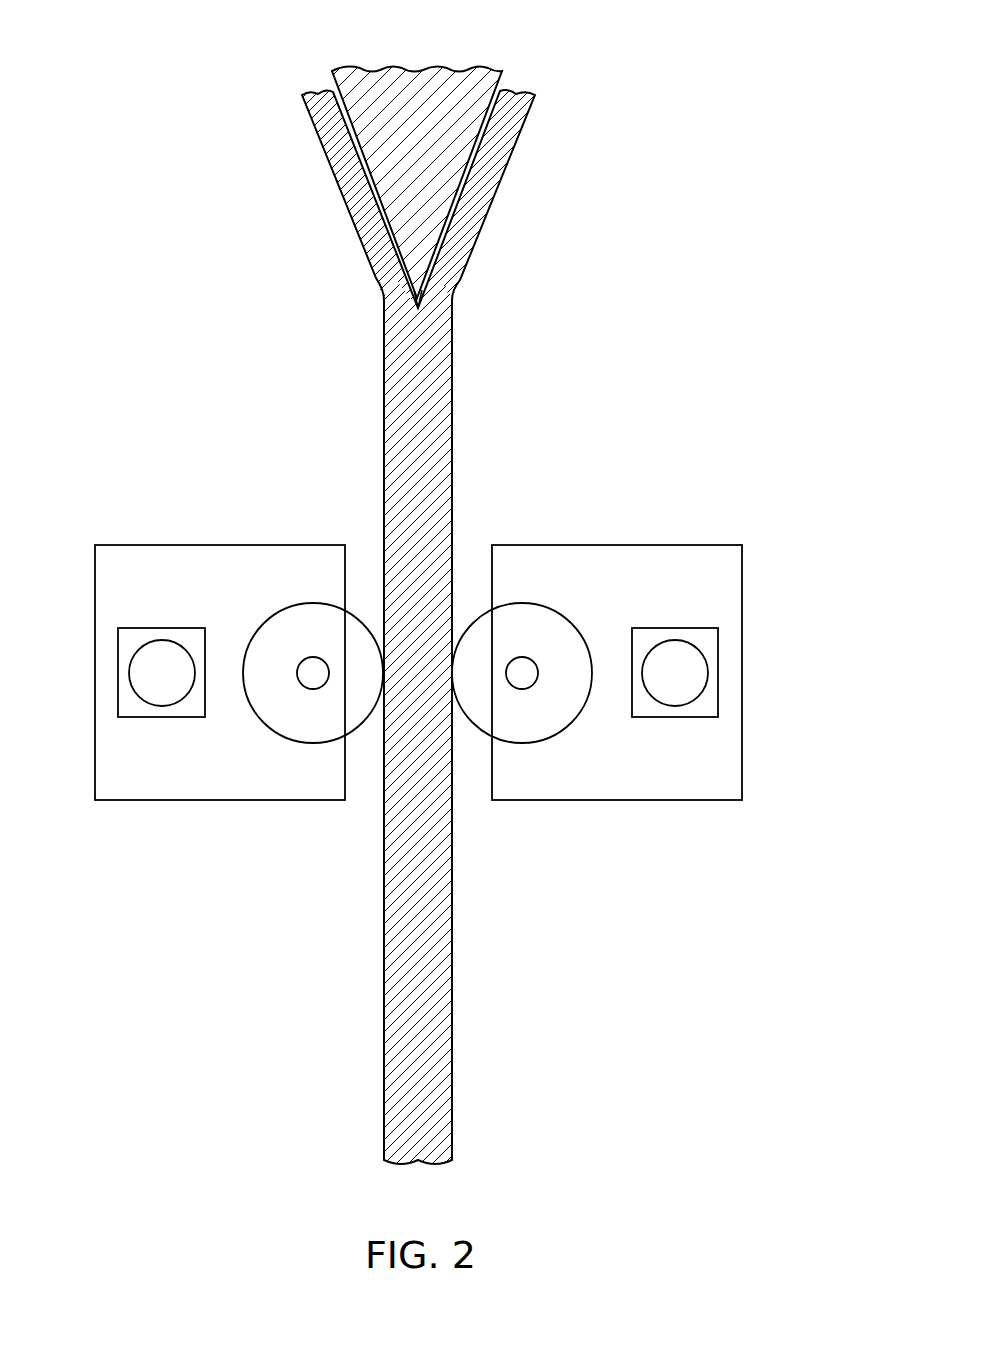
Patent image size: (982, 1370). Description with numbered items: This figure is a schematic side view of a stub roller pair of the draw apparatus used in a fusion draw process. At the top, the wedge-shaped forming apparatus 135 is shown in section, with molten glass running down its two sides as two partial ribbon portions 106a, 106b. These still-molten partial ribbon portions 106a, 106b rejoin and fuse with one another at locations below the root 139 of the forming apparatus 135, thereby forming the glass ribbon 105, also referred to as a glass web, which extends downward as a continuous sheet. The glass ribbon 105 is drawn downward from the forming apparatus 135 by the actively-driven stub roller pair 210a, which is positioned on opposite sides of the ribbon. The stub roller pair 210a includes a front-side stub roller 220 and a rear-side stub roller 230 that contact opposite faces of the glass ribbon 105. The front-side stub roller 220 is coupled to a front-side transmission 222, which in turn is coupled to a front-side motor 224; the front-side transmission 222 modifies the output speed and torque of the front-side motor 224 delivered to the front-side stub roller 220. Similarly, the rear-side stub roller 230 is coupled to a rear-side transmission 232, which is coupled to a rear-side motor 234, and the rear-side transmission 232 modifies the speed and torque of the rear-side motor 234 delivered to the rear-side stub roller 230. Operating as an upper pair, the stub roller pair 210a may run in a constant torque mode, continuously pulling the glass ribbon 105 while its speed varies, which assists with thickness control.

The glass ribbon 105 is at (474, 422).
The partial ribbon portion 106a is at (497, 188).
The partial ribbon portion 106b is at (340, 193).
The forming apparatus 135 is at (508, 81).
The root 139 is at (418, 281).
The upper stub roller pair 210a is at (80, 504).
The front-side stub roller 220 is at (568, 617).
The front-side transmission 222 is at (623, 545).
The front-side motor 224 is at (713, 672).
The rear-side stub roller 230 is at (270, 617).
The rear-side transmission 232 is at (212, 545).
The rear-side motor 234 is at (128, 672).